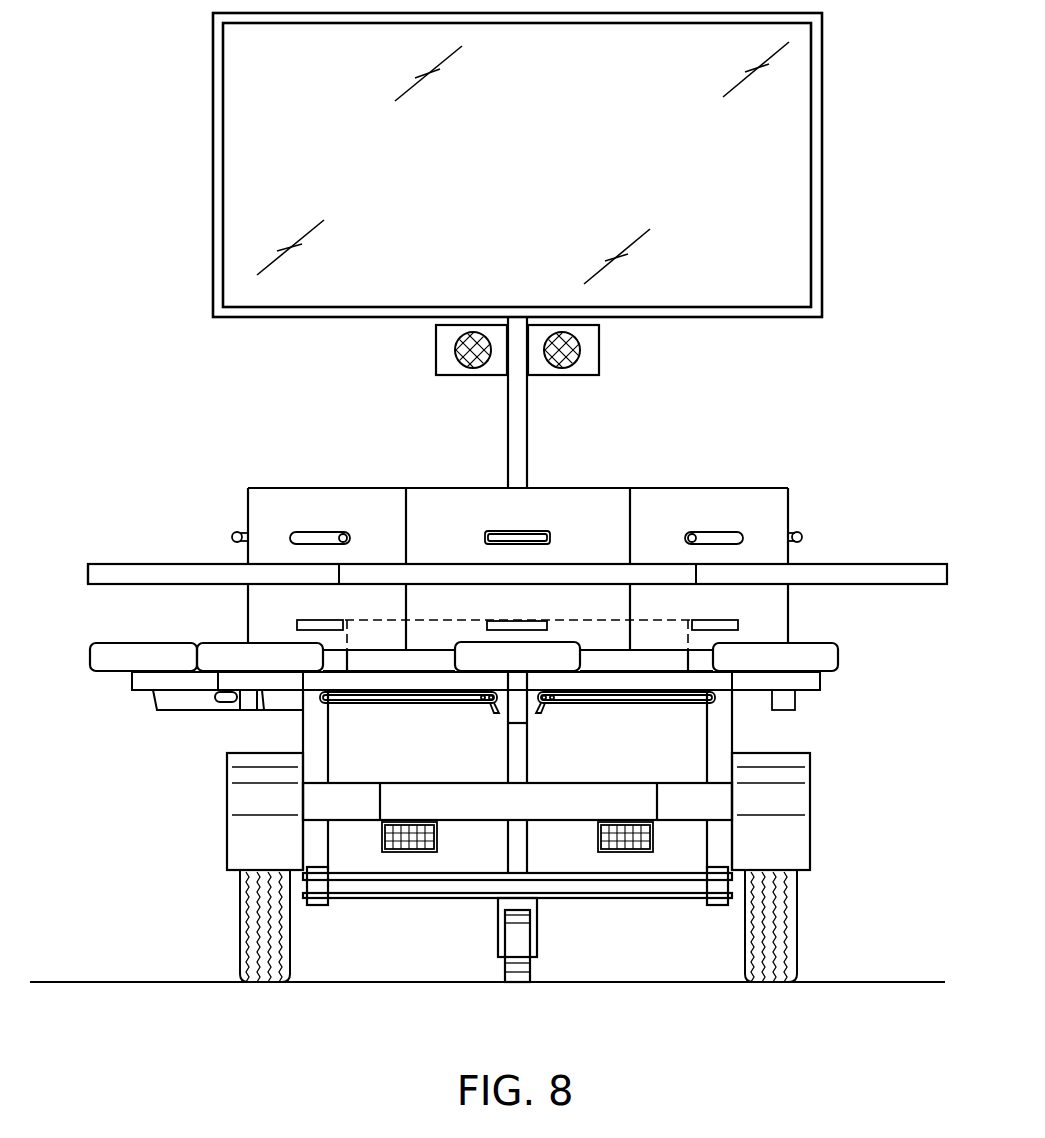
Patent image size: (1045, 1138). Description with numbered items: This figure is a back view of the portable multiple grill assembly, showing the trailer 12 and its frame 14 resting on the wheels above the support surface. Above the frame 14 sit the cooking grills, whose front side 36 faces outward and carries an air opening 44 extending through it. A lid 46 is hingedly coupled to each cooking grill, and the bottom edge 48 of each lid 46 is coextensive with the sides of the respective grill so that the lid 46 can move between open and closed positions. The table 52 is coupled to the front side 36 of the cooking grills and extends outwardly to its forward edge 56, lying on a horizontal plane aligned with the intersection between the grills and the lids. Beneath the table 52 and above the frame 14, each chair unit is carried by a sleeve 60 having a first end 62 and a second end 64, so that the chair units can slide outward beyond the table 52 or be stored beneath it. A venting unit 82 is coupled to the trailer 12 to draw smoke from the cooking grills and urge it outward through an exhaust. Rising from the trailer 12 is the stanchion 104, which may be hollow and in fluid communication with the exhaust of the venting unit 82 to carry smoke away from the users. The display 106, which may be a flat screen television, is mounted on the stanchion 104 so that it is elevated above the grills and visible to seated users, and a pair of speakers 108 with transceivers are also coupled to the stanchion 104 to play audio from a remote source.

The trailer 12 is at (212, 795).
The frame 14 is at (693, 820).
The front side 36 is at (272, 609).
The air opening 44 is at (300, 620).
The lid 46 is at (430, 488).
The bottom edge 48 is at (745, 565).
The table 52 is at (110, 564).
The forward edge 56 is at (88, 572).
The sleeve 60 is at (432, 700).
The first end 62 is at (510, 680).
The second end 64 is at (302, 682).
The venting unit 82 is at (658, 620).
The stanchion 104 is at (508, 420).
The display 106 is at (213, 135).
The speakers 108 is at (488, 375).